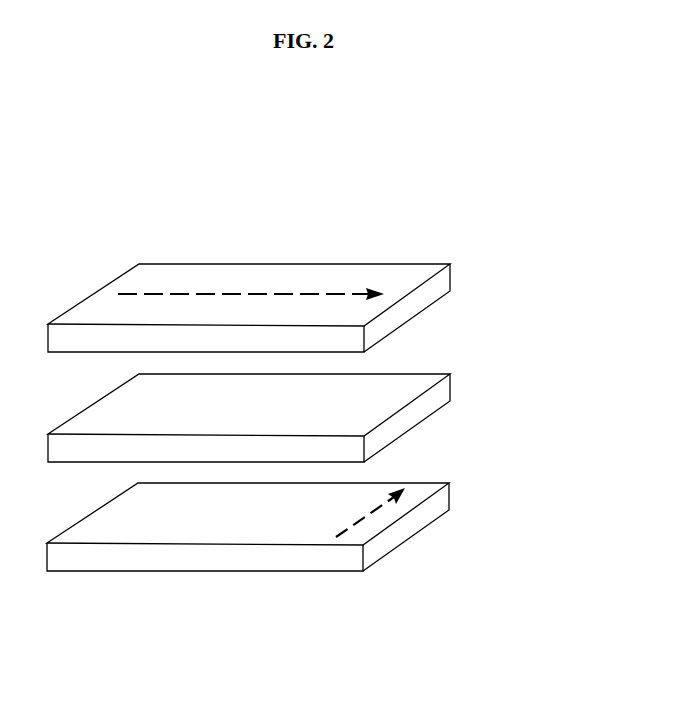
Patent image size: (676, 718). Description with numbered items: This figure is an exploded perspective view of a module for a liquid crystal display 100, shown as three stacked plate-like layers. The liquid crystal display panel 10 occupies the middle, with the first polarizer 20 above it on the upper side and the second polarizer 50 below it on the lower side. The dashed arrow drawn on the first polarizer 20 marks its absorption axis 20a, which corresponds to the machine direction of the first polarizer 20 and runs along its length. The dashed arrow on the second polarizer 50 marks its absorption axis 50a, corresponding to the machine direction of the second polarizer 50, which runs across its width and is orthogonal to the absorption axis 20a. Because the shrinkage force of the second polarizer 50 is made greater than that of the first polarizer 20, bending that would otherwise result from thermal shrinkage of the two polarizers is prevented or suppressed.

The module for a liquid crystal display 100 is at (452, 195).
The first polarizer 20 is at (446, 283).
The absorption axis 20a is at (274, 294).
The liquid crystal display panel 10 is at (446, 392).
The second polarizer 50 is at (445, 502).
The absorption axis 50a is at (362, 518).